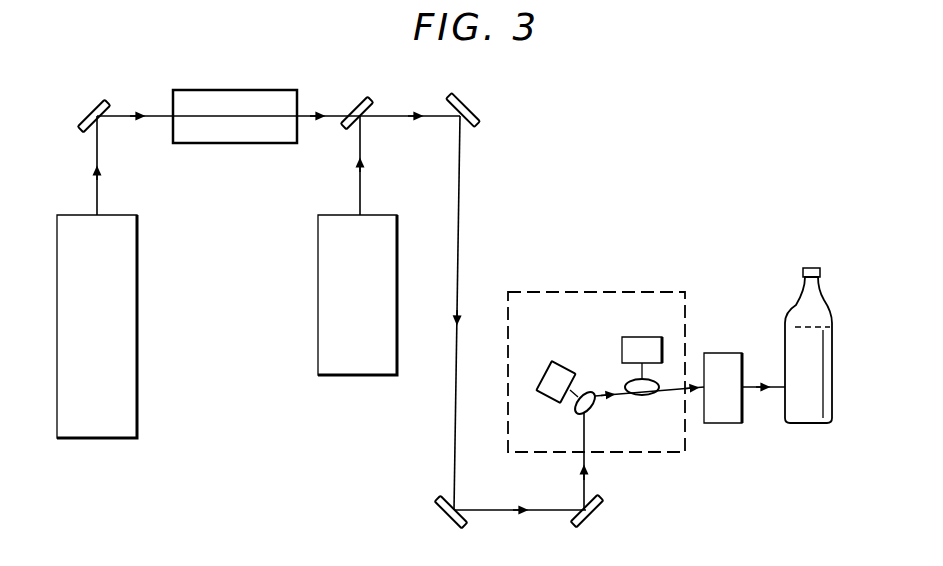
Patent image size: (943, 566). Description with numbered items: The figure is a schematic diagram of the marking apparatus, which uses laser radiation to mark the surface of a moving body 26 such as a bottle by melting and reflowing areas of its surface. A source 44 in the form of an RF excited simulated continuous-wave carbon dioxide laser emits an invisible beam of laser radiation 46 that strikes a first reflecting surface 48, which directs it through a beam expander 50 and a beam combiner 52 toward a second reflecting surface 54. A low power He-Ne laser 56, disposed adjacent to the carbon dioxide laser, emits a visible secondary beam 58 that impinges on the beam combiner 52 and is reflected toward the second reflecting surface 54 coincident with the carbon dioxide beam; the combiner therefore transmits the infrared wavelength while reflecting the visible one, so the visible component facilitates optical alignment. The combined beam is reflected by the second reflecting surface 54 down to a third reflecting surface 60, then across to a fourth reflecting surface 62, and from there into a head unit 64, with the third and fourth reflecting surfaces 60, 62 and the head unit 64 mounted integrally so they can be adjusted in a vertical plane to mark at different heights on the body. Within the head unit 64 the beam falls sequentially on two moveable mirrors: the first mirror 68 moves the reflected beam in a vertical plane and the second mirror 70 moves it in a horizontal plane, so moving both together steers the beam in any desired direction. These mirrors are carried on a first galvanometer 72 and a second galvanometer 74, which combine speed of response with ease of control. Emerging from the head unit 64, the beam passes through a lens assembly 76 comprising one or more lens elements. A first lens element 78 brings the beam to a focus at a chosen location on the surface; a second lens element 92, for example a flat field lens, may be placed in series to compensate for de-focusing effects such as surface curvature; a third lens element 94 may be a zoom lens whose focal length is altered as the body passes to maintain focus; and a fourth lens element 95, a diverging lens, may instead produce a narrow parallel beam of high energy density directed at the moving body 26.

The moving body 26 is at (808, 425).
The source of laser radiation 44 is at (125, 338).
The beam of laser radiation 46 is at (97, 197).
The first reflecting surface 48 is at (90, 110).
The beam expander 50 is at (234, 90).
The beam combiner 52 is at (353, 100).
The second reflecting surface 54 is at (471, 101).
The He-Ne laser 56 is at (318, 307).
The secondary beam of visible laser radiation 58 is at (362, 178).
The third reflecting surface 60 is at (445, 518).
The fourth reflecting surface 62 is at (590, 515).
The head unit 64 is at (660, 460).
The first moveable mirror 68 is at (576, 412).
The second moveable mirror 70 is at (637, 398).
The first galvanometer 72 is at (548, 364).
The second galvanometer 74 is at (633, 337).
The lens assembly 76 is at (720, 432).
The first lens element 78 is at (706, 353).
The second lens element 92 is at (716, 353).
The third lens element 94 is at (742, 353).
The fourth lens element 95 is at (734, 424).